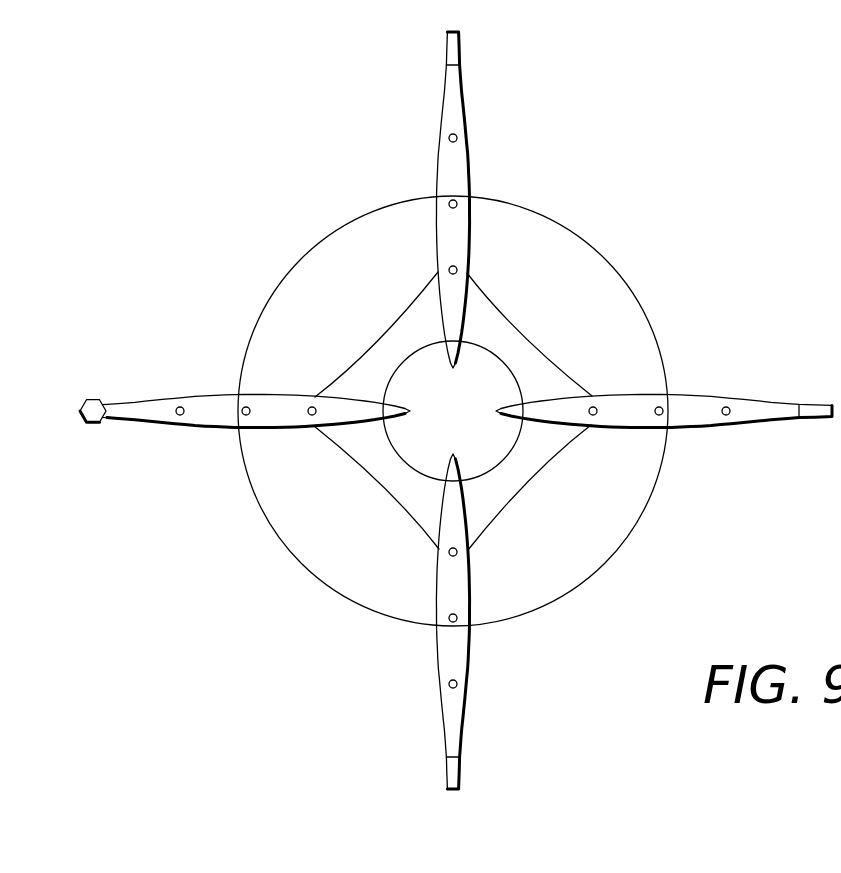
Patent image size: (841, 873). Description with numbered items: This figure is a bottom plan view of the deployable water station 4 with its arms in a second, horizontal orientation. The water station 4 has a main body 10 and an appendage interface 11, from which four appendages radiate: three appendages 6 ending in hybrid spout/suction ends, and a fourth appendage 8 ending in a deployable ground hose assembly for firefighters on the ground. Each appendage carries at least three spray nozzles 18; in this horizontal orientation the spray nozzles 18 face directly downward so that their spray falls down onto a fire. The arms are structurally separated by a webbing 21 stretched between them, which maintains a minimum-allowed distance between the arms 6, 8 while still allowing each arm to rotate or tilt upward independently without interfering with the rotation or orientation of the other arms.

The water station 4 is at (260, 186).
The appendages 6 is at (468, 136).
The fourth appendage 8 is at (170, 395).
The main body 10 is at (615, 263).
The appendage interface 11 is at (505, 362).
The spray nozzles 18 is at (181, 406).
The webbing 21 is at (523, 482).